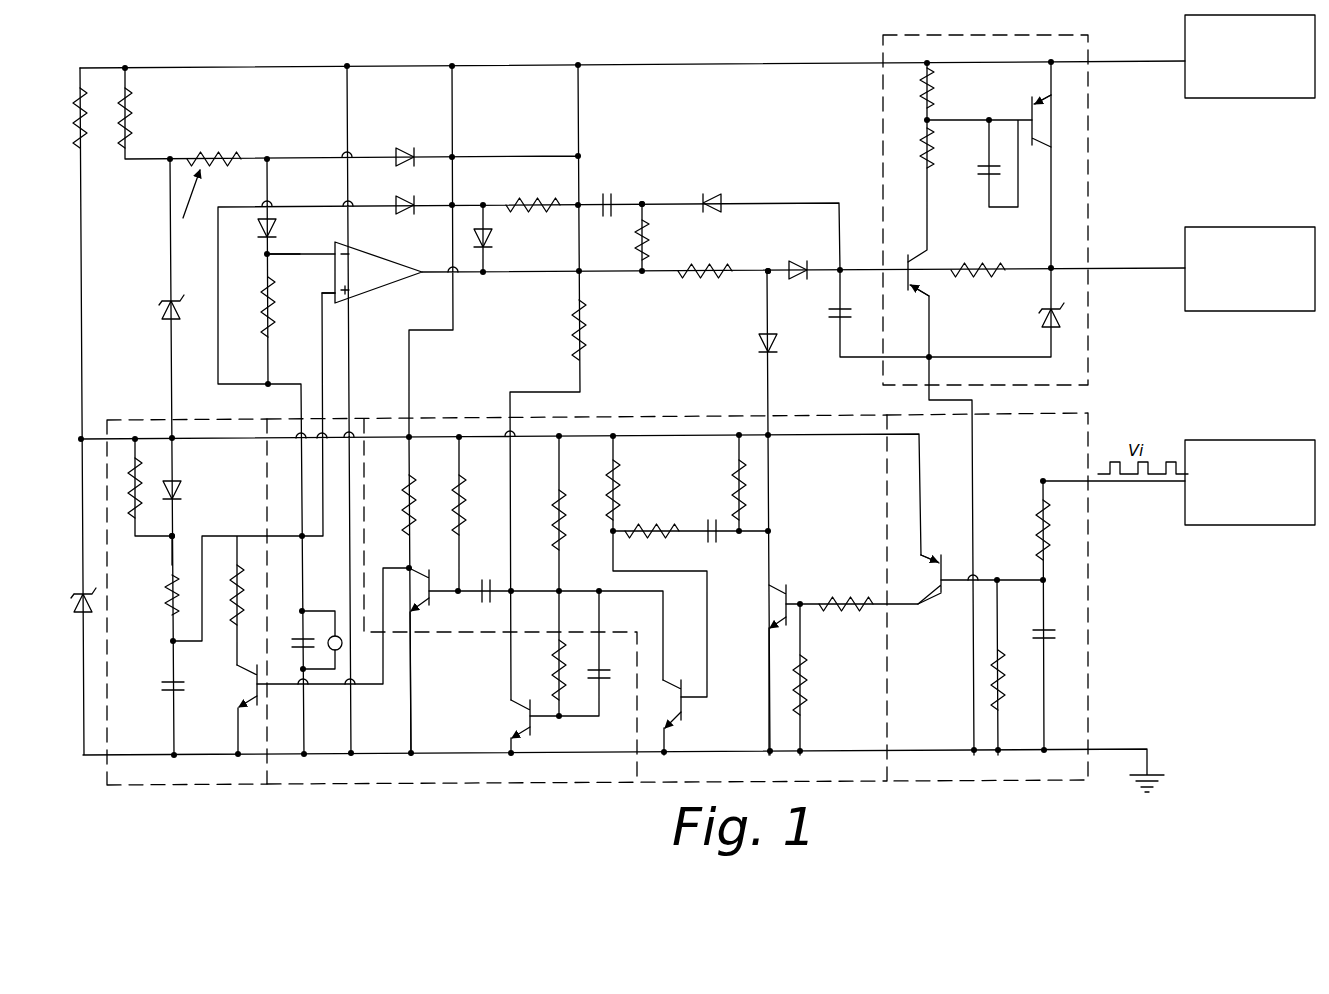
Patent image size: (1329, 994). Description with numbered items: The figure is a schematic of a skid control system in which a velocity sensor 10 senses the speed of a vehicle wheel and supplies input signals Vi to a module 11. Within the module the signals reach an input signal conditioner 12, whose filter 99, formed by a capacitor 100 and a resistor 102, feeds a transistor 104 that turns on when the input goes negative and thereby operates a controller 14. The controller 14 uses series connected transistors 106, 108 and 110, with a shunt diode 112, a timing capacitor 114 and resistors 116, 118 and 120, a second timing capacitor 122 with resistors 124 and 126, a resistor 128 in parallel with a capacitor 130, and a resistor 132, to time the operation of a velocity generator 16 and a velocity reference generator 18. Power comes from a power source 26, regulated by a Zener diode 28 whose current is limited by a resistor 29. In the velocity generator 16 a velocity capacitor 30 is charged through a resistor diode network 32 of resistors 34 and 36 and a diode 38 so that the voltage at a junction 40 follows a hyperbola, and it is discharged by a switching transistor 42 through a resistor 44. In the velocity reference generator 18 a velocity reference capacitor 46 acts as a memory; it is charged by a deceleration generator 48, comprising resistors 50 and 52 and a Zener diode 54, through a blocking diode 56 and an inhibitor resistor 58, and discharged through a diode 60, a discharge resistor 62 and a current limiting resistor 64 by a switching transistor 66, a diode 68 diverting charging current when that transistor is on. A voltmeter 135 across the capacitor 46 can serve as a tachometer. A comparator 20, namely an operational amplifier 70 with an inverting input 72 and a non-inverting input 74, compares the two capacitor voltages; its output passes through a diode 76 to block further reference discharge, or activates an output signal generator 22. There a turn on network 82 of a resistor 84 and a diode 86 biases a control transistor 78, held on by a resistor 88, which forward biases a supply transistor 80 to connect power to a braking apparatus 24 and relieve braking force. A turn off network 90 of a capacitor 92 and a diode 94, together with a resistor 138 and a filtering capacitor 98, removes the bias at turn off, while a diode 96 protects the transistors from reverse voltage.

The velocity sensor 10 is at (1235, 439).
The module 11 is at (730, 58).
The input signal conditioner 12 is at (1080, 410).
The controller 14 is at (657, 412).
The velocity generator 16 is at (150, 418).
The velocity reference generator 18 is at (290, 418).
The comparator 20 is at (380, 291).
The output signal generator 22 is at (1093, 142).
The braking apparatus 24 is at (1234, 226).
The power source 26 is at (1270, 100).
The Zener diode 28 is at (82, 617).
The resistor 29 is at (78, 100).
The velocity capacitor 30 is at (168, 692).
The resistor diode network 32 is at (162, 545).
The resistor 34 is at (120, 505).
The resistor 36 is at (175, 560).
The diode 38 is at (180, 481).
The junction 40 is at (170, 641).
The switching transistor 42 is at (250, 686).
The resistor 44 is at (235, 626).
The velocity reference capacitor 46 is at (299, 633).
The deceleration generator 48 is at (190, 207).
The resistor 50 is at (130, 135).
The resistor 52 is at (215, 150).
The Zener diode 54 is at (162, 310).
The blocking diode 56 is at (264, 240).
The inhibitor resistor 58 is at (265, 325).
The diode 60 is at (402, 196).
The discharge resistor 62 is at (515, 203).
The current limiting resistor 64 is at (586, 330).
The switching transistor 66 is at (527, 711).
The diode 68 is at (405, 146).
The operational amplifier 70 is at (378, 250).
The inverting input 72 is at (332, 248).
The non-inverting input 74 is at (322, 292).
The diode 76 is at (490, 241).
The control transistor 78 is at (912, 252).
The supply transistor 80 is at (1037, 133).
The turn on network 82 is at (757, 280).
The resistor 84 is at (712, 263).
The diode 86 is at (797, 260).
The resistor 88 is at (967, 276).
The turn off network 90 is at (657, 197).
The capacitor 92 is at (612, 197).
The diode 94 is at (719, 195).
The diode 96 is at (1047, 318).
The filtering capacitor 98 is at (855, 290).
The filter 99 is at (1047, 610).
The capacitor 100 is at (1050, 640).
The resistor 102 is at (1040, 505).
The transistor 104 is at (943, 595).
The transistor 106 is at (777, 620).
The transistor 108 is at (666, 676).
The transistor 110 is at (416, 608).
The shunt diode 112 is at (777, 346).
The timing capacitor 114 is at (714, 545).
The resistor 116 is at (614, 466).
The resistor 118 is at (655, 527).
The resistor 120 is at (739, 470).
The timing capacitor 122 is at (483, 580).
The resistor 124 is at (466, 520).
The resistor 126 is at (556, 522).
The resistor 128 is at (557, 668).
The capacitor 130 is at (612, 682).
The resistor 132 is at (403, 518).
The voltmeter 135 is at (338, 634).
The resistor 138 is at (647, 235).